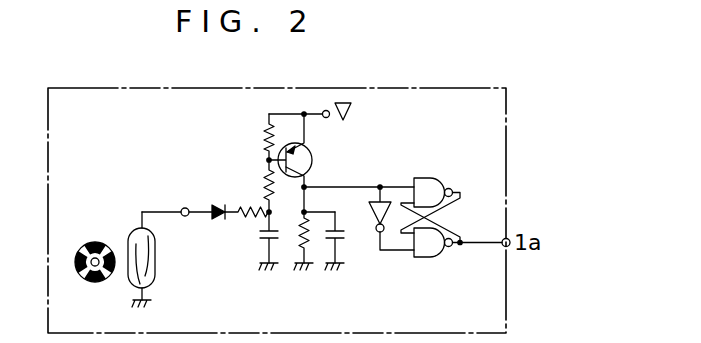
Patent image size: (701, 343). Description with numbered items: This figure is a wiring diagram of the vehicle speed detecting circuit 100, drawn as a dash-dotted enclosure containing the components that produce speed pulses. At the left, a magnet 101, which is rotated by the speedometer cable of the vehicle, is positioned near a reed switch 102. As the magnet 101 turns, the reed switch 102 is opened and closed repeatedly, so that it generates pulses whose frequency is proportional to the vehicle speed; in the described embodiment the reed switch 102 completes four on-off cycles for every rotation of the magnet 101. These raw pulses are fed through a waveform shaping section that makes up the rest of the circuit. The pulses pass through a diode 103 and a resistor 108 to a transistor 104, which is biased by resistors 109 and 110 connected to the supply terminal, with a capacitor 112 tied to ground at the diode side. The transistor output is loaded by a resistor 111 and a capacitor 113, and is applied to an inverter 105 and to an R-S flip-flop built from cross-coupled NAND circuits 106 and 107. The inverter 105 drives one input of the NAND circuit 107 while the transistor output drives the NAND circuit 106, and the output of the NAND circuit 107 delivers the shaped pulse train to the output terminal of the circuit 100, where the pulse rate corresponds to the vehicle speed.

The vehicle speed detecting circuit 100 is at (506, 125).
The magnet 101 is at (97, 242).
The reed switch 102 is at (155, 262).
The diode 103 is at (213, 206).
The transistor 104 is at (311, 162).
The inverter 105 is at (370, 210).
The NAND circuit 106 is at (428, 178).
The NAND circuit 107 is at (428, 257).
The resistor 108 is at (247, 218).
The resistor 109 is at (266, 178).
The resistor 110 is at (267, 130).
The resistor 111 is at (309, 238).
The capacitor 112 is at (262, 240).
The capacitor 113 is at (341, 240).